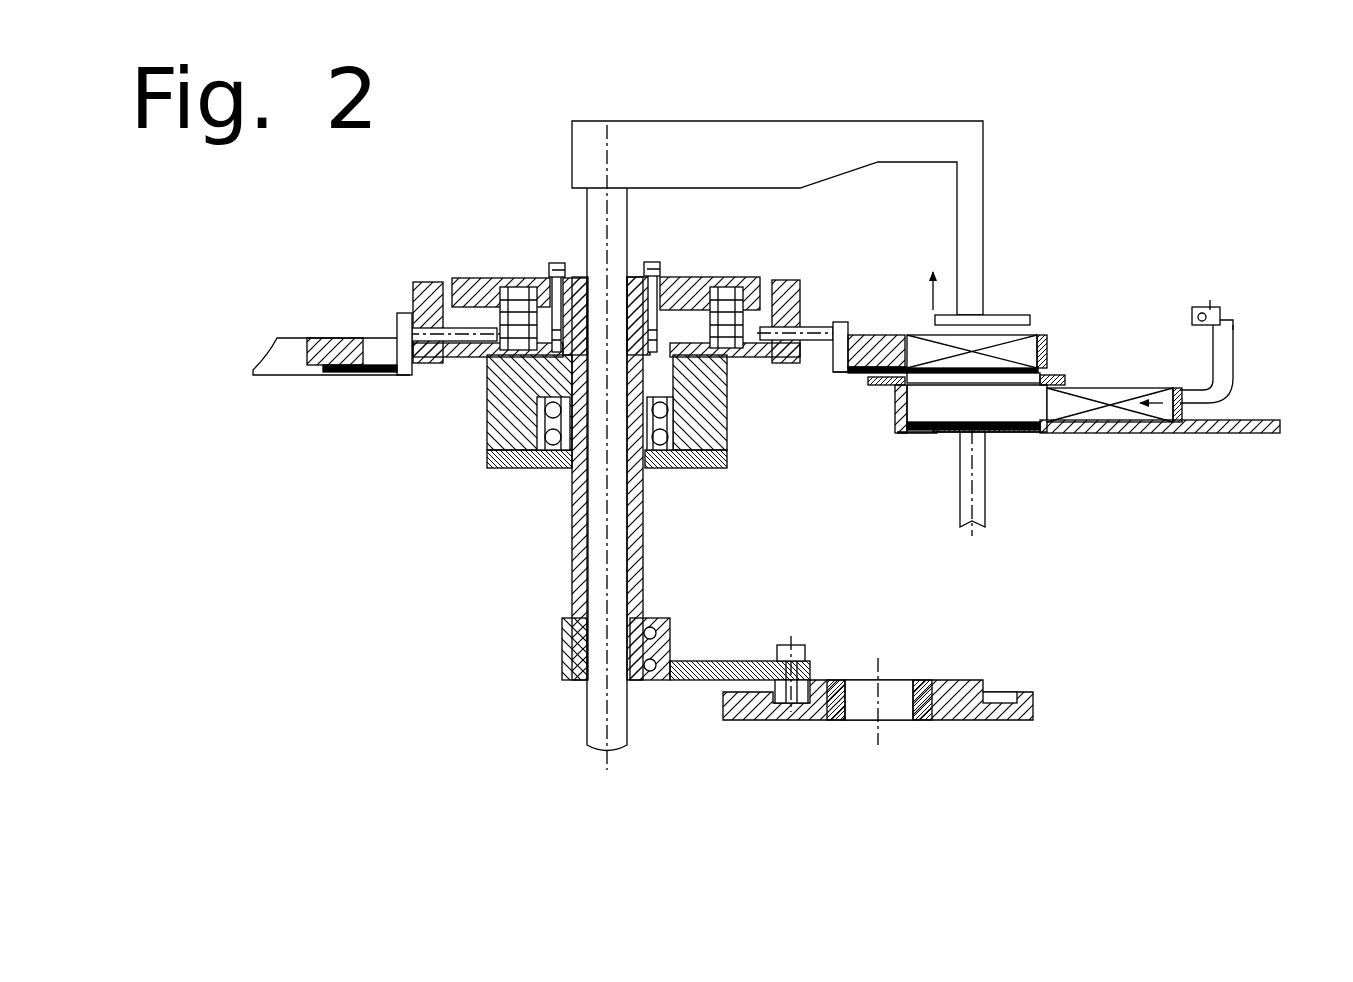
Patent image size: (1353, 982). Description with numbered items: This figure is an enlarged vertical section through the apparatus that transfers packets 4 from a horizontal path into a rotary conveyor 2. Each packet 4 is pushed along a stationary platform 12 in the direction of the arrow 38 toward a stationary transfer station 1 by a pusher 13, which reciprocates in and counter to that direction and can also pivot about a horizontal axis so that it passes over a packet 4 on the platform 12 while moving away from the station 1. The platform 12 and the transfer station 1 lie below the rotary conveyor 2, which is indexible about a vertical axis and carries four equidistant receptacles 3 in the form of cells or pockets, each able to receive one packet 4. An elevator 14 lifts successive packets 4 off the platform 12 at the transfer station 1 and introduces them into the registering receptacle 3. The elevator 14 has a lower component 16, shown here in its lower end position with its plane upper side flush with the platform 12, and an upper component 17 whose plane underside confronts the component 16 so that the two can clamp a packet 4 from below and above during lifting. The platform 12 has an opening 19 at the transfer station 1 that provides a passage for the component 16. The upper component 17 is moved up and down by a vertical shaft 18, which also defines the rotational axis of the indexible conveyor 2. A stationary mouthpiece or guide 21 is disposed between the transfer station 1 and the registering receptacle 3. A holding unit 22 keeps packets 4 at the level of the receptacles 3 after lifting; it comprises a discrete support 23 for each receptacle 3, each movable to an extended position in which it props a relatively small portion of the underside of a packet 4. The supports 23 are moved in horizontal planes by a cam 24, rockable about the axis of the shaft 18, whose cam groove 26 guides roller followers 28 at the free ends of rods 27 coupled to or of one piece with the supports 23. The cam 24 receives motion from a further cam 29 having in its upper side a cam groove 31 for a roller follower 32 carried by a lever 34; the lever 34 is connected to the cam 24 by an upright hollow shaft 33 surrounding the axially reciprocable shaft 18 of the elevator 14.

The transfer station 1 is at (900, 447).
The rotary conveyor 2 is at (547, 470).
The receptacle 3 is at (295, 368).
The accumulation (packet) 4 is at (1013, 348).
The stationary platform 12 is at (1098, 435).
The pusher 13 is at (1230, 373).
The elevator (conveyor) 14 is at (982, 532).
The lower component of the elevator 16 is at (1017, 435).
The upper component of the elevator 17 is at (1007, 313).
The vertical shaft 18 is at (600, 227).
The opening (window) 19 is at (923, 428).
The stationary mouthpiece (guide) 21 is at (880, 383).
The holding unit 22 is at (842, 308).
The support 23 is at (840, 370).
The cam 24 is at (460, 278).
The cam groove 26 is at (717, 287).
The rod 27 is at (818, 323).
The roller follower 28 is at (750, 282).
The further cam 29 is at (1033, 708).
The cam groove 31 is at (1007, 690).
The roller follower 32 is at (817, 680).
The upright hollow shaft 33 is at (583, 558).
The lever 34 is at (717, 660).
The arrow 38 is at (1163, 418).